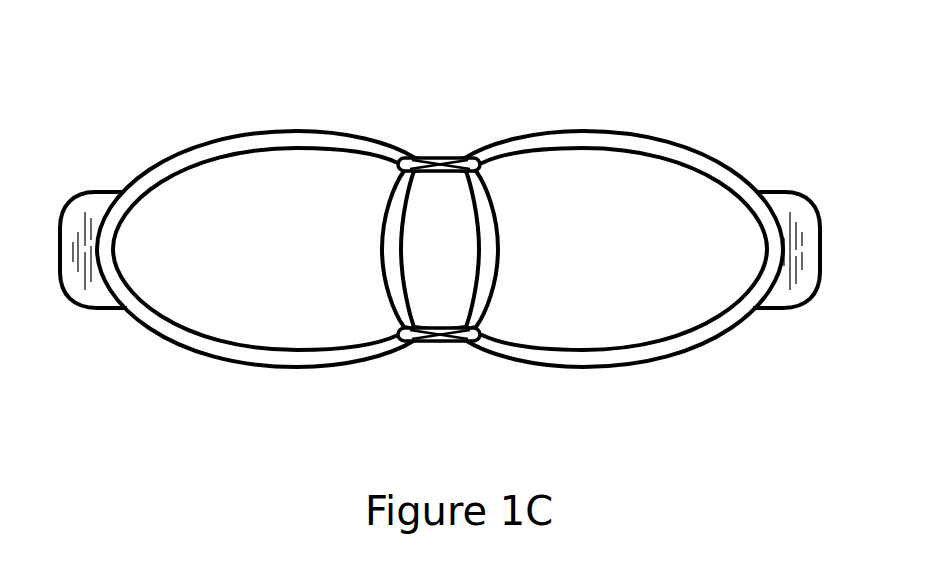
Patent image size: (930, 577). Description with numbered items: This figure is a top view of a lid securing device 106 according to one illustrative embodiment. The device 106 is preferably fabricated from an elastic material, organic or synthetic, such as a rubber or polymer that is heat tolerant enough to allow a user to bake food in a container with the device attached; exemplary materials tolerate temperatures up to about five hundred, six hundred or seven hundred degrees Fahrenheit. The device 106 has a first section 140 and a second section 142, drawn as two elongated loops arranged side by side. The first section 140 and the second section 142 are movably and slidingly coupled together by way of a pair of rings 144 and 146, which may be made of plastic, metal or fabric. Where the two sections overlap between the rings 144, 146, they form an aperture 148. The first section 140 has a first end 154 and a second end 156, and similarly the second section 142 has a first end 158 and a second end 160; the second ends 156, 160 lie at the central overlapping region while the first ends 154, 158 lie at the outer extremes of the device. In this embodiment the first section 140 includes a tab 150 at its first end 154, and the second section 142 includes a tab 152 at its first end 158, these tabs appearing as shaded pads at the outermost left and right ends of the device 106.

The lid securing device 106 is at (543, 61).
The first section 140 is at (322, 130).
The second section 142 is at (618, 131).
The ring 144 is at (480, 167).
The ring 146 is at (478, 334).
The aperture 148 is at (418, 227).
The tab 150 is at (90, 195).
The tab 152 is at (780, 302).
The first end 154 is at (177, 344).
The second end 156 is at (497, 252).
The first end 158 is at (710, 158).
The second end 160 is at (382, 257).